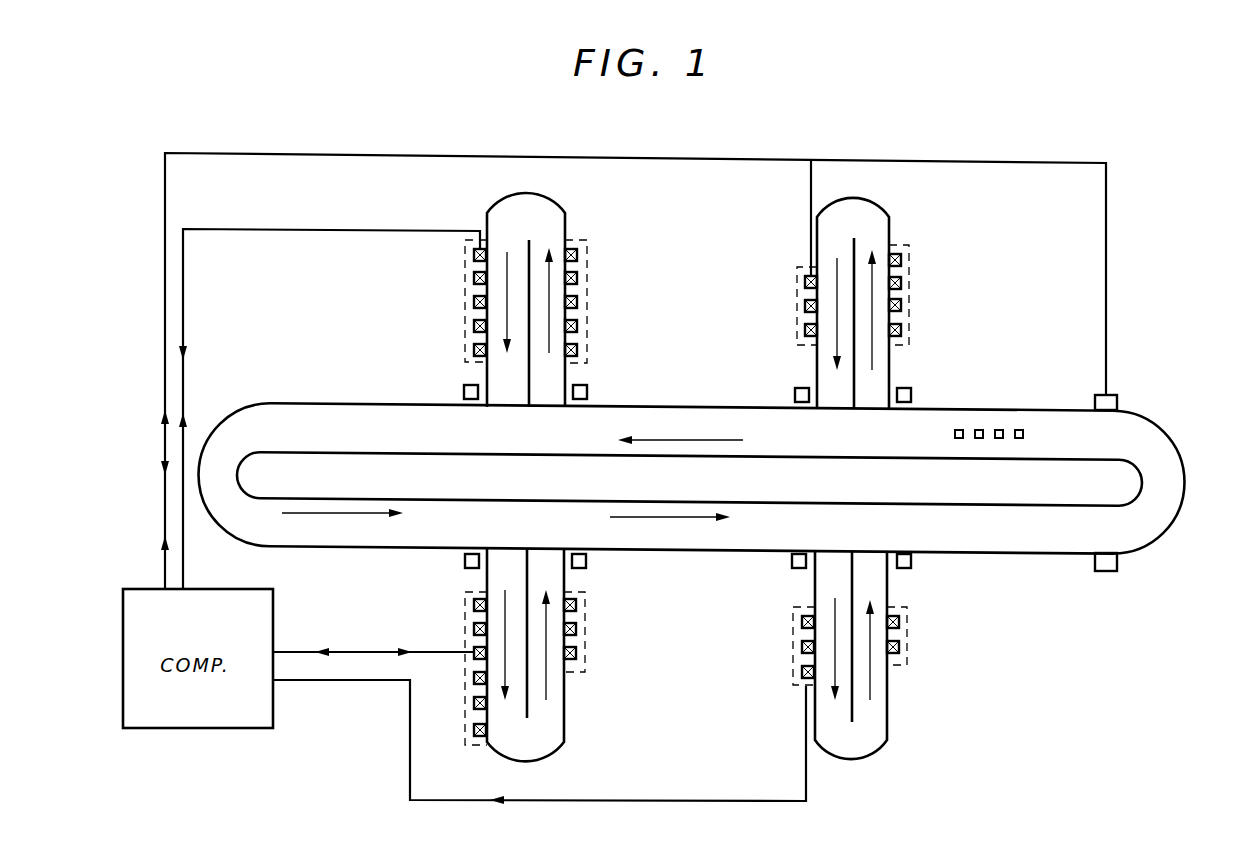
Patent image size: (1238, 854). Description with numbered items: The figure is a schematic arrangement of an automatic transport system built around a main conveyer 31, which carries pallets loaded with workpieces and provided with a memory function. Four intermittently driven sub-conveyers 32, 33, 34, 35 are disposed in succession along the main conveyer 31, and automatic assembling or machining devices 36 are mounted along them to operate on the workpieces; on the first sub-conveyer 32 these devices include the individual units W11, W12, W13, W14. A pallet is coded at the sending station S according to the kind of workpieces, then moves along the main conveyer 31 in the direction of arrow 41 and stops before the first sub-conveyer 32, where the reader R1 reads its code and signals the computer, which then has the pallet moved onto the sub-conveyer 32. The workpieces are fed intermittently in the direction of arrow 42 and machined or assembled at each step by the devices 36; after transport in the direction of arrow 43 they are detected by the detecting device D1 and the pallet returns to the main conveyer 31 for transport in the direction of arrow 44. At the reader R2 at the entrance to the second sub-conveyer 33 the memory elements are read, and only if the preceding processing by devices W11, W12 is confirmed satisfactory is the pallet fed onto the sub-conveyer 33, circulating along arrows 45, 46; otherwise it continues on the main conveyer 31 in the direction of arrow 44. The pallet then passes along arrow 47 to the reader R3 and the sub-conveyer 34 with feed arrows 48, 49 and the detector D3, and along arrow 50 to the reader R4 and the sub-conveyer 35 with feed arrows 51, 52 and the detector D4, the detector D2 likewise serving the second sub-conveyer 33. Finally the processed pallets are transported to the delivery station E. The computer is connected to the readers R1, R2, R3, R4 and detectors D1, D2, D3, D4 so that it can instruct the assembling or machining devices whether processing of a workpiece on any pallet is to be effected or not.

The main conveyer 31 is at (946, 424).
The first sub-conveyer 32 is at (868, 208).
The second sub-conveyer 33 is at (553, 216).
The sub-conveyer 34 is at (548, 730).
The sub-conveyer 35 is at (872, 732).
The automatic assembling or machining devices 36 is at (466, 312).
The arrow 41 is at (948, 443).
The arrow 42 is at (873, 327).
The arrow 43 is at (834, 331).
The arrow 44 is at (680, 428).
The arrow 45 is at (549, 318).
The arrow 46 is at (508, 320).
The arrow 47 is at (342, 525).
The arrow 48 is at (508, 632).
The arrow 49 is at (548, 632).
The arrow 50 is at (670, 529).
The arrow 51 is at (836, 633).
The arrow 52 is at (875, 633).
The detecting device D1 is at (795, 393).
The detector D2 is at (464, 389).
The detector D3 is at (586, 562).
The detector D4 is at (911, 562).
The reader R1 is at (911, 395).
The reader R2 is at (587, 392).
The reader R3 is at (465, 561).
The reader R4 is at (792, 562).
The sending station S is at (1118, 398).
The delivery station E is at (1110, 572).
The automatic assembling or machining device W11 is at (903, 331).
The automatic assembling or machining device W12 is at (903, 306).
The winding 13 W13 is at (902, 284).
The winding 14 W14 is at (902, 258).